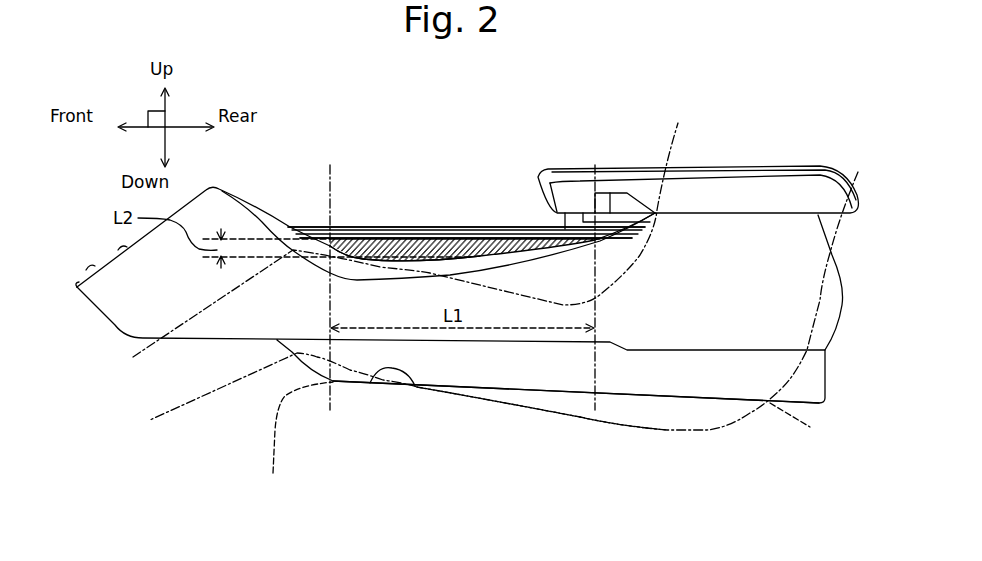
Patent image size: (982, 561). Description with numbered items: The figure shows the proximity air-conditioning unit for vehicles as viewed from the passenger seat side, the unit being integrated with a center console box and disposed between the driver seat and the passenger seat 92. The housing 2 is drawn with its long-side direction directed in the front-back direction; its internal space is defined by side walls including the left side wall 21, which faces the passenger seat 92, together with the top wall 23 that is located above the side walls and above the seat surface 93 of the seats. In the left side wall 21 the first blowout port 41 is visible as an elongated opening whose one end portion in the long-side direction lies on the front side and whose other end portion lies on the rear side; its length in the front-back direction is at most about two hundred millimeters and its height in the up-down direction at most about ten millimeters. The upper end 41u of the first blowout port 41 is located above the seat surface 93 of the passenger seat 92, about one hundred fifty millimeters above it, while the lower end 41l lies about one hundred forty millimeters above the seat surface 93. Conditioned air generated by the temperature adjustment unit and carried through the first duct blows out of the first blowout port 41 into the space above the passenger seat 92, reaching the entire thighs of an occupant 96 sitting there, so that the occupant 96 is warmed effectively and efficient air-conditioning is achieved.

The housing 2 is at (302, 205).
The left side wall 21 is at (693, 330).
The top wall 23 is at (391, 221).
The first blowout port 41 is at (437, 240).
The upper end of first blowout port 41u is at (357, 240).
The lower end of first blowout port 41l is at (368, 255).
The passenger seat 92 is at (275, 430).
The seat surface 93 is at (413, 386).
The occupant 96 is at (580, 417).